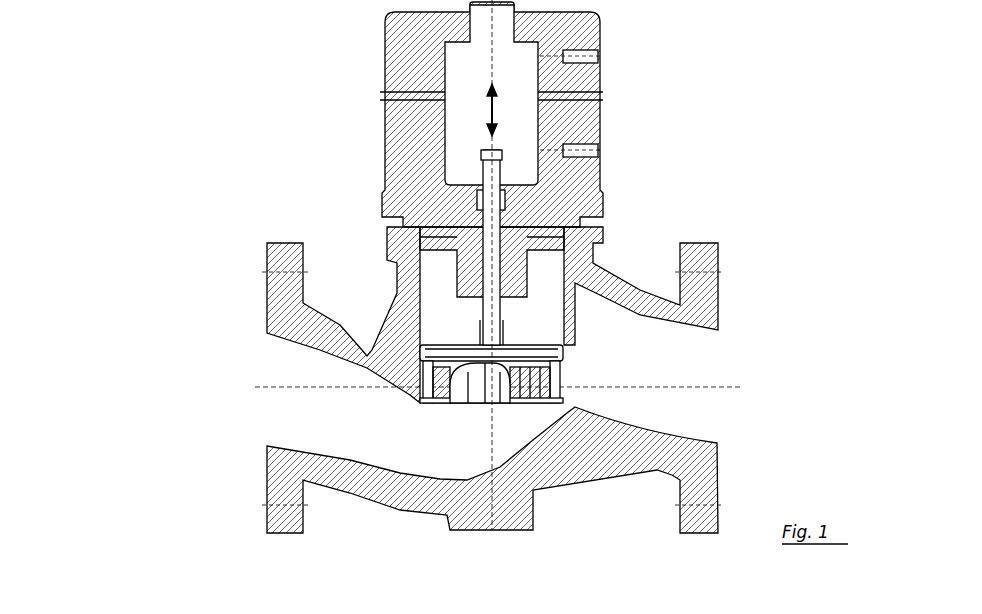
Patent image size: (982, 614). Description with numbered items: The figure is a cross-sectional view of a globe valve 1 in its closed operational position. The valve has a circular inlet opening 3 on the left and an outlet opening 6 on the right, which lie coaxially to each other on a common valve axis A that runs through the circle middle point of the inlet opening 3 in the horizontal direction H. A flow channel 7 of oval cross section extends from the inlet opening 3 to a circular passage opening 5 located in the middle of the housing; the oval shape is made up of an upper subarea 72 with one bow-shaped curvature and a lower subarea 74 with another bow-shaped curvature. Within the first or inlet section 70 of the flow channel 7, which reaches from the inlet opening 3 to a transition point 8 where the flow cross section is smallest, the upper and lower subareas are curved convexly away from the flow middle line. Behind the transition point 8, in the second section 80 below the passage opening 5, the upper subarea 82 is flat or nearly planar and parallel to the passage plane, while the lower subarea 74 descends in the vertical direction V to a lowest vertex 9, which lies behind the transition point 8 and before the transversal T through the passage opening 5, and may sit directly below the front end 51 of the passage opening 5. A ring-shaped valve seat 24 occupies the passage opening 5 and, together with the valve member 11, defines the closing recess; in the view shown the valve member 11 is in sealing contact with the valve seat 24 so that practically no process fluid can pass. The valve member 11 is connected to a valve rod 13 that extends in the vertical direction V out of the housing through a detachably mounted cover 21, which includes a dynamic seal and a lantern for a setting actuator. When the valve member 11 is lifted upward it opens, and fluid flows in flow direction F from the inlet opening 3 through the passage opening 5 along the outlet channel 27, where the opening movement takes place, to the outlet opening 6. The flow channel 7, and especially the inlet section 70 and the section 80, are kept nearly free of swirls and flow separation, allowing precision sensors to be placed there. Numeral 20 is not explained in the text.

The globe valve 1 is at (387, 330).
The inlet opening 3 is at (263, 375).
The passage opening 5 is at (481, 403).
The outlet opening 6 is at (722, 348).
The flow channel 7 is at (287, 360).
The transition point 8 is at (410, 420).
The lowest vertex 9 is at (435, 488).
The valve member 11 is at (502, 330).
The valve rod 13 is at (520, 345).
The valve body 20 is at (482, 362).
The cover 21 is at (557, 212).
The valve seat 24 is at (539, 431).
The outlet channel 27 is at (667, 377).
The front end of the passage opening 51 is at (420, 387).
The inlet section 70 is at (393, 437).
The upper subarea 72 is at (335, 343).
The lower subarea 74 is at (347, 463).
The second section 80 is at (432, 444).
The upper subarea of the second section 82 is at (568, 412).
The valve axis A is at (303, 392).
The flow direction F is at (357, 430).
The transversal T is at (496, 117).
The vertical direction V is at (53, 553).
The horizontal direction H is at (53, 553).